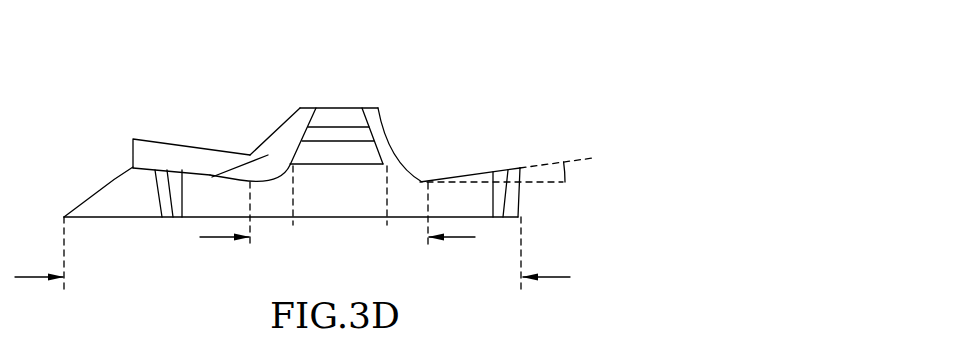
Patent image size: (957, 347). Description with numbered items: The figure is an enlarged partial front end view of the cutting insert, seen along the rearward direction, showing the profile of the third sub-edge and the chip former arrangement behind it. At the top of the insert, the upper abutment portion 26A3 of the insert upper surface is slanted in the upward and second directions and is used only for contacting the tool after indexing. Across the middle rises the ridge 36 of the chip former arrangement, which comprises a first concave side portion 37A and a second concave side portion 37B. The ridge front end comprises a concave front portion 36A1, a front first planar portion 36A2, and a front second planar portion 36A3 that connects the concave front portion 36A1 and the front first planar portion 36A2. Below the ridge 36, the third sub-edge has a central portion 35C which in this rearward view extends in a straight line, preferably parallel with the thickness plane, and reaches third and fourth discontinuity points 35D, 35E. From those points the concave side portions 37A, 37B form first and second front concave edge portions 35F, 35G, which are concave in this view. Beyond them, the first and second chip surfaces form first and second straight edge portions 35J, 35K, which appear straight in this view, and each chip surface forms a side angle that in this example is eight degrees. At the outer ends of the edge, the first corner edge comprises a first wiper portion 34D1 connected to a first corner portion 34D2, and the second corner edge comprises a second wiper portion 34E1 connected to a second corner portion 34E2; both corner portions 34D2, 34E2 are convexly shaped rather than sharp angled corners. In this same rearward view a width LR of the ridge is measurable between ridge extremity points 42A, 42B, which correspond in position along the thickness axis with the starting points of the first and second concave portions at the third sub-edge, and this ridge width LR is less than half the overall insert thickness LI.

The upper abutment portion 26A3 is at (200, 146).
The second straight edge portion 35K is at (192, 167).
The second wiper portion 34E1 is at (175, 167).
The second corner portion 34E2 is at (162, 167).
The second front concave edge portion 35G is at (293, 138).
The second concave side portion 37B is at (277, 167).
The ridge extremity point 42B is at (246, 163).
The ridge 36 is at (327, 104).
The front second planar portion 36A3 is at (355, 118).
The first concave side portion 37A is at (387, 138).
The front first planar portion 36A2 is at (432, 152).
The concave front portion 36A1 is at (404, 172).
The first front concave edge portion 35F is at (415, 180).
The central portion 35C is at (340, 168).
The fourth discontinuity point 35E is at (294, 167).
The third discontinuity point 35D is at (381, 168).
The ridge extremity point 42A is at (422, 182).
The first straight edge portion 35J is at (485, 171).
The first wiper portion 34D1 is at (502, 169).
The first corner portion 34D2 is at (517, 167).
The width of the ridge LR is at (463, 237).
The overall insert thickness LI is at (557, 277).